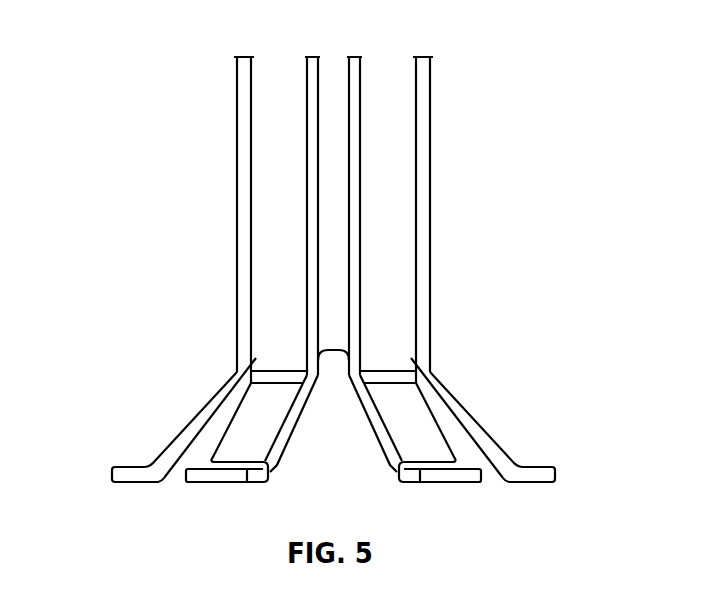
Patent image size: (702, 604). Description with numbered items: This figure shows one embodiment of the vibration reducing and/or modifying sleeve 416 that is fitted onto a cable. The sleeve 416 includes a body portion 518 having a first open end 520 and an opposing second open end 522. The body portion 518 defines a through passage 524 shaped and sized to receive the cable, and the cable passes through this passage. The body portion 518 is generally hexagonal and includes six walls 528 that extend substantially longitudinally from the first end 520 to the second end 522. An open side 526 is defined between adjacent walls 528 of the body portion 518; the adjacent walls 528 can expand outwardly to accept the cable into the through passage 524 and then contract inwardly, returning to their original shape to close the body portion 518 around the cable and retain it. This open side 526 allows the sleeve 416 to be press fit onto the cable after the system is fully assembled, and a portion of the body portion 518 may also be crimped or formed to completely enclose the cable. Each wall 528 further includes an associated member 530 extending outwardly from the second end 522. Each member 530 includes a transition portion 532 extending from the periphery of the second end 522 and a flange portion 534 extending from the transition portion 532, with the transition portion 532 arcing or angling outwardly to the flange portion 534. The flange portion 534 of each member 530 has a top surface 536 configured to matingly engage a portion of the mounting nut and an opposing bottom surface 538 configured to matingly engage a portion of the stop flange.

The sleeve 416 is at (128, 88).
The body portion 518 is at (430, 202).
The first open end 520 is at (240, 57).
The second open end 522 is at (235, 360).
The through passage 524 is at (333, 57).
The open side 526 is at (333, 406).
The walls 528 is at (273, 203).
The member 530 is at (227, 482).
The transition portion 532 is at (197, 417).
The flange portion 534 is at (553, 472).
The top surface 536 is at (532, 465).
The bottom surface 538 is at (528, 482).